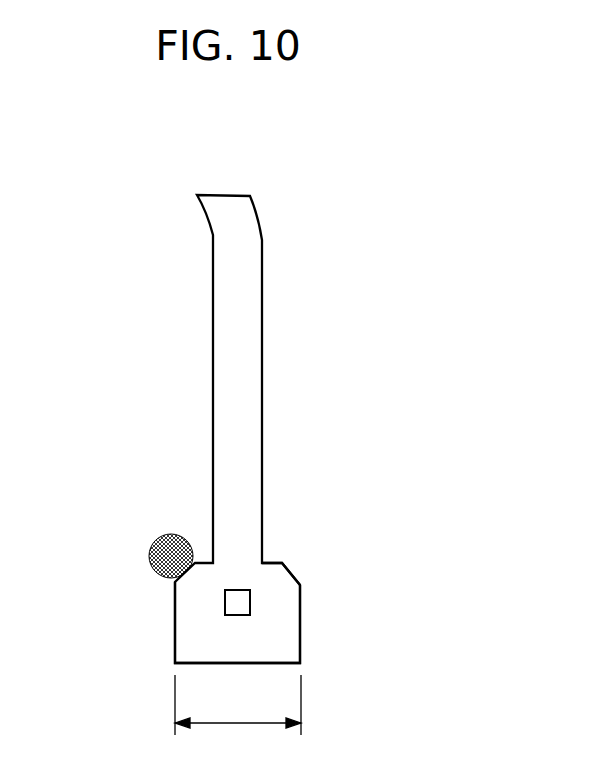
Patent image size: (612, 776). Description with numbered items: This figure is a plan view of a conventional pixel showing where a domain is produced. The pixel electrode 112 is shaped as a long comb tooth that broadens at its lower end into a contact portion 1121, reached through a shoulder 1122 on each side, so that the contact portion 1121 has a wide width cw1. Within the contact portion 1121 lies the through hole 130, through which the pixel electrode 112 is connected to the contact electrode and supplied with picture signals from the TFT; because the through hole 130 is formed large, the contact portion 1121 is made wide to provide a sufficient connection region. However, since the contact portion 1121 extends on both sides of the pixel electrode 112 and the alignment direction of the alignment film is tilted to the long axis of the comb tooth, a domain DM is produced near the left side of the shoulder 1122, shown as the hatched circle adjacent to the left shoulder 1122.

The pixel electrode 112 is at (250, 308).
The shoulder 1122 is at (290, 565).
The contact portion 1121 is at (287, 642).
The through hole 130 is at (242, 600).
The domain DM is at (157, 553).
The wide width of the contact portion cw1 is at (238, 705).